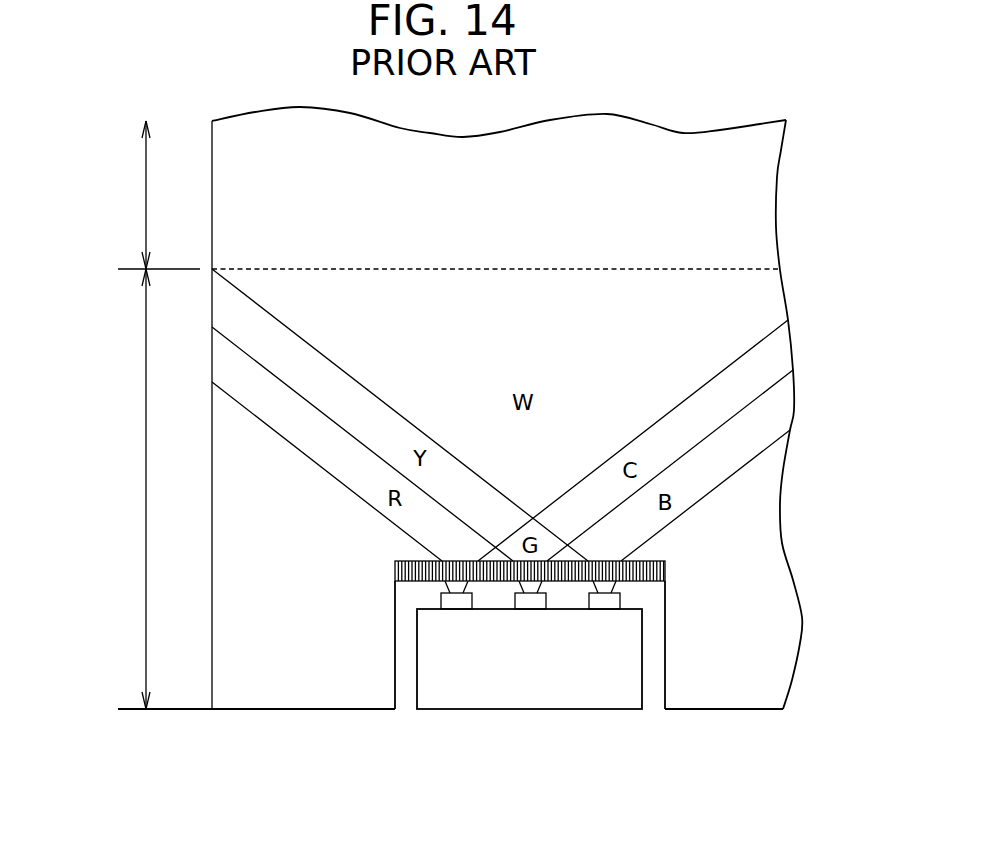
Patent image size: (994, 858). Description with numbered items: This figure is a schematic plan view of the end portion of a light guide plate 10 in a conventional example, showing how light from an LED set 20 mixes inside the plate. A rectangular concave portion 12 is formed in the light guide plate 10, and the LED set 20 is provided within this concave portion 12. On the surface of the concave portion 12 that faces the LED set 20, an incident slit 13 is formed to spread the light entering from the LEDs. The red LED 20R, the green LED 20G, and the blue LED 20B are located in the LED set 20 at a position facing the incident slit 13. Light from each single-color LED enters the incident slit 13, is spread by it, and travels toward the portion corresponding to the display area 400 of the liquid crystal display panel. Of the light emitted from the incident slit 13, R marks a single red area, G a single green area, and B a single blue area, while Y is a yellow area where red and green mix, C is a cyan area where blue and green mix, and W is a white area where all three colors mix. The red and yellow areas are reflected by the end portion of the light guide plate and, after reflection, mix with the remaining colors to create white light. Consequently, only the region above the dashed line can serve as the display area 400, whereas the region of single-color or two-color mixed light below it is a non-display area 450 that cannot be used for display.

The light guide plate 10 is at (212, 633).
The concave portion 12 is at (397, 675).
The incident slit 13 is at (413, 581).
The LED set 20 is at (537, 690).
The red LED 20R is at (457, 603).
The green LED 20G is at (531, 603).
The blue LED 20B is at (605, 603).
The display area 400 is at (142, 195).
The non-display area 450 is at (117, 489).